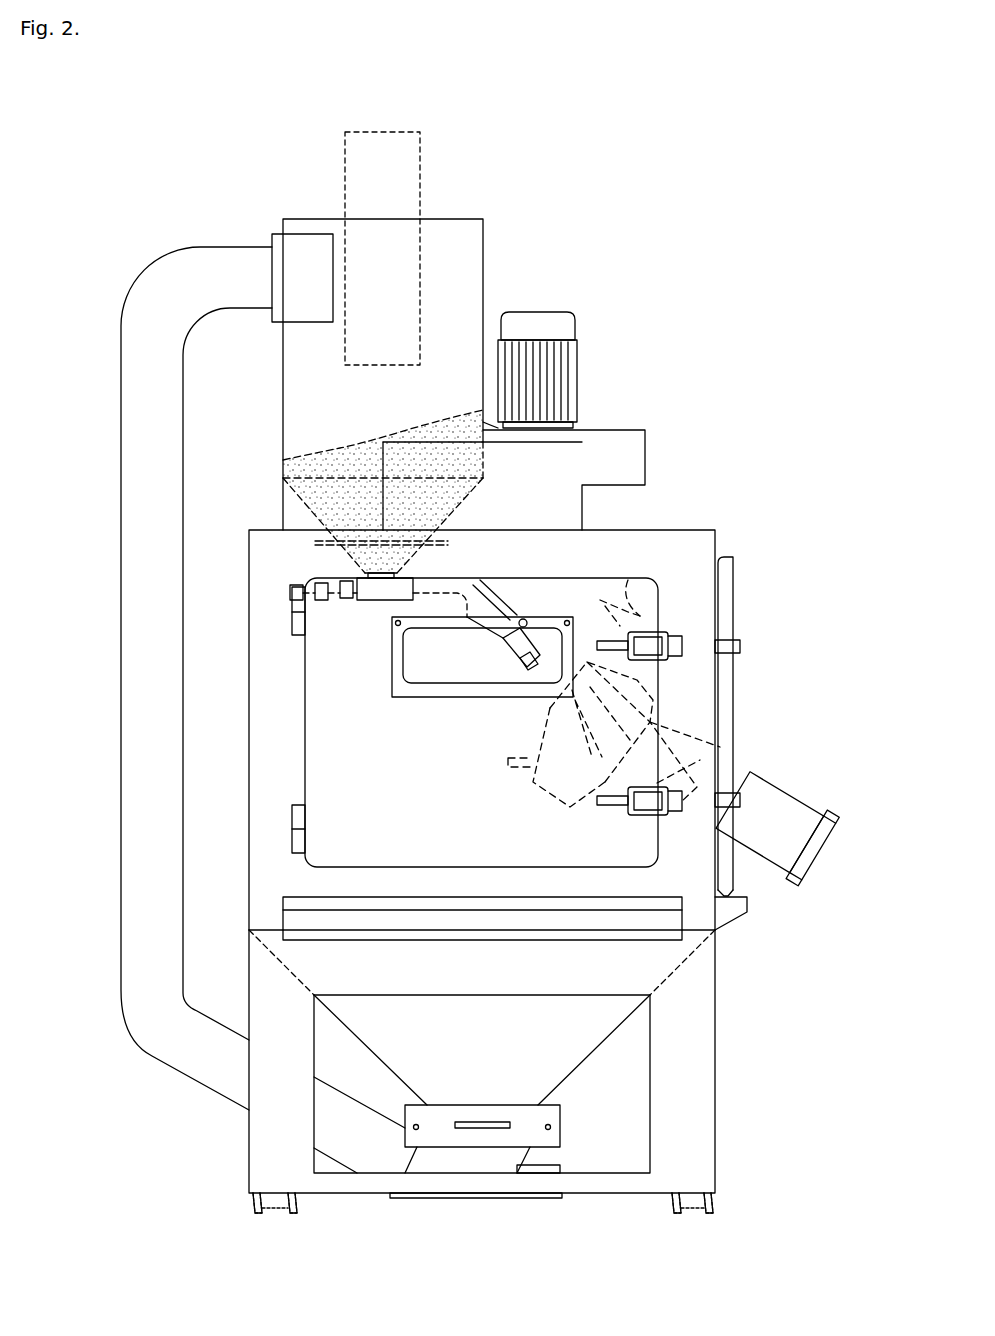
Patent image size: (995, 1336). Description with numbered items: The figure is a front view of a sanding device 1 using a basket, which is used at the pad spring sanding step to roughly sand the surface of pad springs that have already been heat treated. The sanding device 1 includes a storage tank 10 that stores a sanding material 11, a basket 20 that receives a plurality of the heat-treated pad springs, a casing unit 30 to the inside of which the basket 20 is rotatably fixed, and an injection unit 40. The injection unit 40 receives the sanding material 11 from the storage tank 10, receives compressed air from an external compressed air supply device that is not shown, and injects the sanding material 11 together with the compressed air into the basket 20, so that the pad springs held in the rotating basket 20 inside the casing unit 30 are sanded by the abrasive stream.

The sanding device 1 is at (730, 323).
The storage tank 10 is at (548, 203).
The sanding material 11 is at (333, 493).
The basket 20 is at (625, 577).
The casing unit 30 is at (567, 670).
The injection unit 40 is at (552, 612).